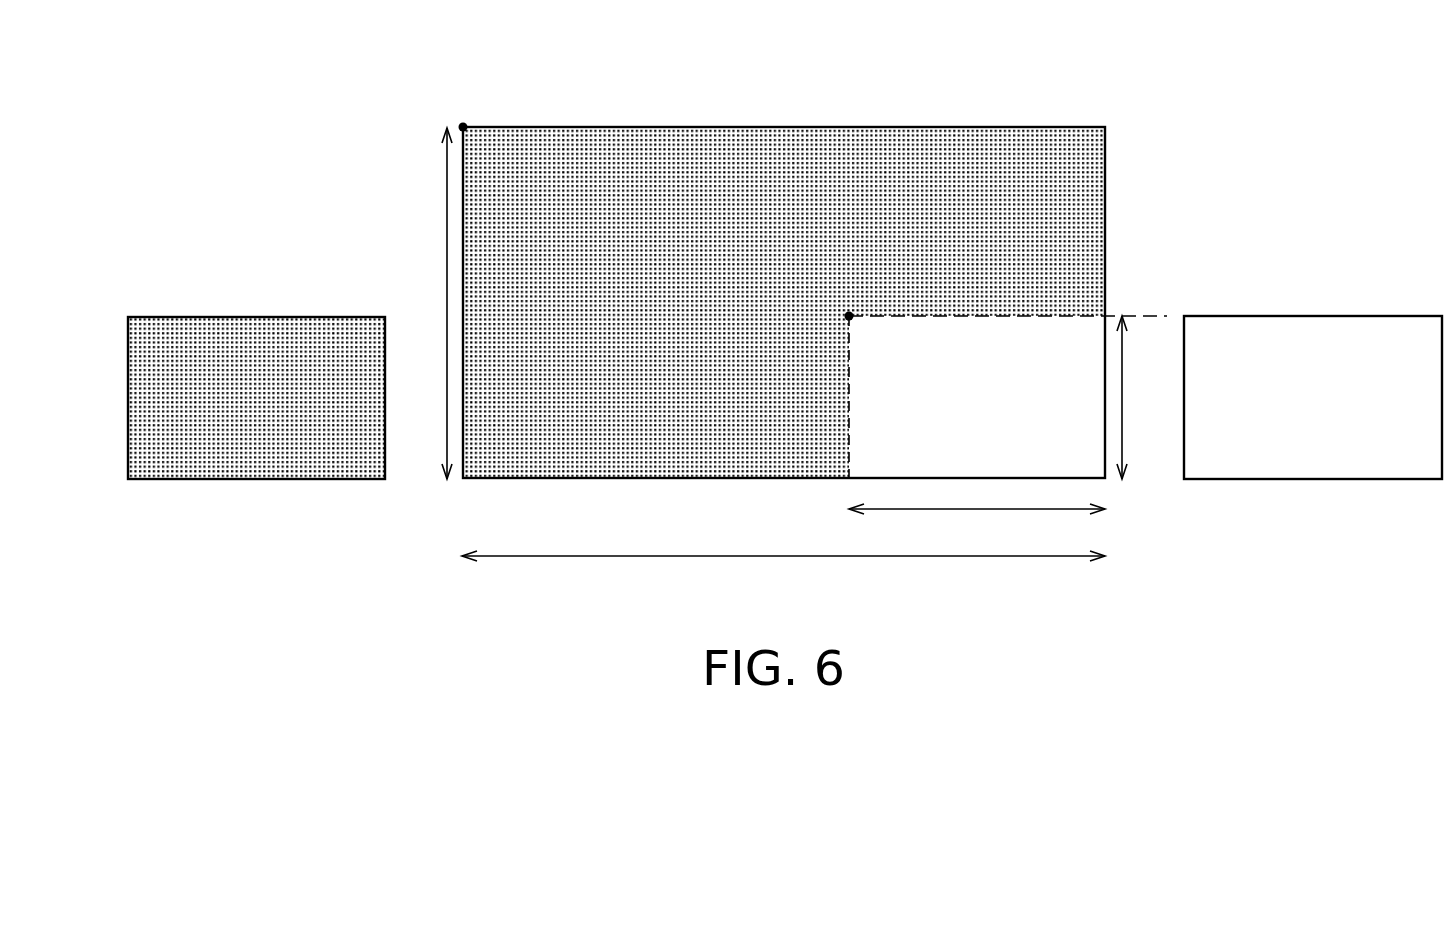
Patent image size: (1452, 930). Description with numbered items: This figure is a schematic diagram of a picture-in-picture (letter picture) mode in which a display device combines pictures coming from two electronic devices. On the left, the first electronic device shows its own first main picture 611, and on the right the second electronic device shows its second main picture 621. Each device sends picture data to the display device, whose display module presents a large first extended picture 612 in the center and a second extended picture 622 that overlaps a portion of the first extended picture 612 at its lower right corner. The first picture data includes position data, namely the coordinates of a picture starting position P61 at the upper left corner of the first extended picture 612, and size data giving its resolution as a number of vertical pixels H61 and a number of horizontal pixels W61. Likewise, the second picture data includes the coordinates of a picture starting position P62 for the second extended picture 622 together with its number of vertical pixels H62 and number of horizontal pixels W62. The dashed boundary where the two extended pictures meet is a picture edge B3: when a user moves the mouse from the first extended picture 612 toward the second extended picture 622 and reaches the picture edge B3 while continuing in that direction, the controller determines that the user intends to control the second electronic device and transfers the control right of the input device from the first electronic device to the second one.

The first main picture 611 is at (257, 316).
The first extended picture 612 is at (807, 127).
The second main picture 621 is at (1313, 316).
The second extended picture 622 is at (1088, 479).
The picture starting position P61 is at (463, 125).
The picture starting position P62 is at (850, 319).
The picture edge B3 is at (1137, 316).
The number of vertical pixels H61 is at (427, 303).
The number of vertical pixels H62 is at (1144, 397).
The number of horizontal pixels W61 is at (783, 570).
The number of horizontal pixels W62 is at (977, 524).